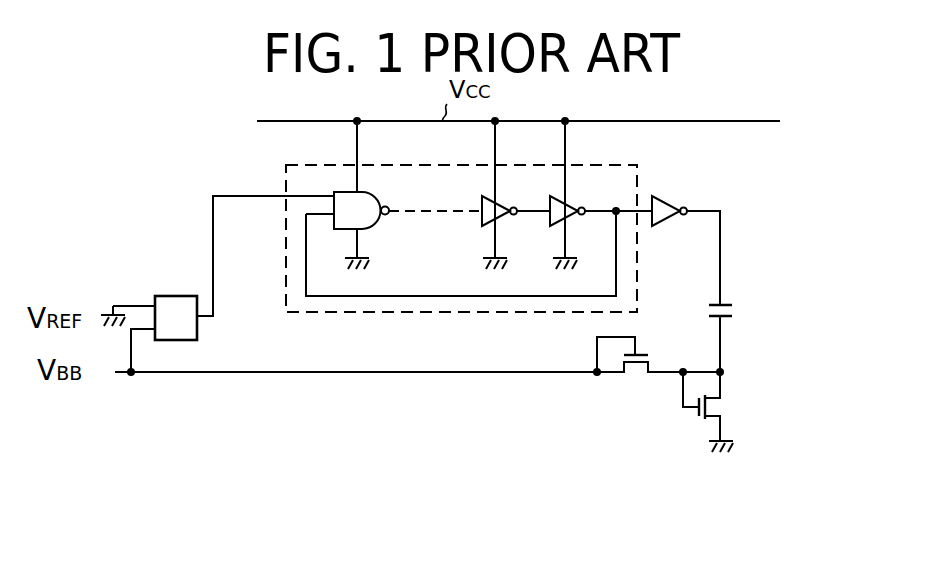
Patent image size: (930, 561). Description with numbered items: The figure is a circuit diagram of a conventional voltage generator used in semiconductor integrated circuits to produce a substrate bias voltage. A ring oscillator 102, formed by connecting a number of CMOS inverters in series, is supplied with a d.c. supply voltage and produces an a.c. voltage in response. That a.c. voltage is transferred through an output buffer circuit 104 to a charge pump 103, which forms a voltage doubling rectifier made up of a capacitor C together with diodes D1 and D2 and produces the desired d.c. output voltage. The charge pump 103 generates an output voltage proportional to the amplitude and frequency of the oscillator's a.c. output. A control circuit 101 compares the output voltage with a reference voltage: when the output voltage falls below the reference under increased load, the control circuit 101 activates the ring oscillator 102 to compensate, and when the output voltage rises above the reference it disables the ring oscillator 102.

The control circuit 101 is at (171, 296).
The ring oscillator 102 is at (637, 164).
The charge pump 103 is at (725, 356).
The output buffer circuit 104 is at (682, 200).
The capacitor C is at (737, 302).
The diode D1 is at (637, 378).
The diode D2 is at (731, 410).